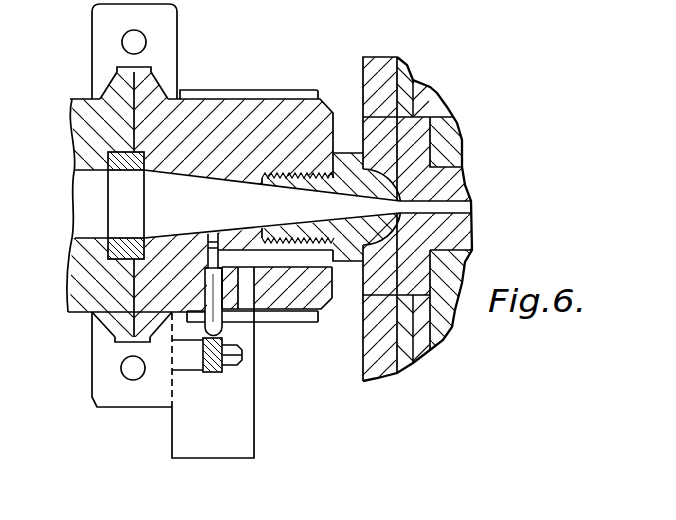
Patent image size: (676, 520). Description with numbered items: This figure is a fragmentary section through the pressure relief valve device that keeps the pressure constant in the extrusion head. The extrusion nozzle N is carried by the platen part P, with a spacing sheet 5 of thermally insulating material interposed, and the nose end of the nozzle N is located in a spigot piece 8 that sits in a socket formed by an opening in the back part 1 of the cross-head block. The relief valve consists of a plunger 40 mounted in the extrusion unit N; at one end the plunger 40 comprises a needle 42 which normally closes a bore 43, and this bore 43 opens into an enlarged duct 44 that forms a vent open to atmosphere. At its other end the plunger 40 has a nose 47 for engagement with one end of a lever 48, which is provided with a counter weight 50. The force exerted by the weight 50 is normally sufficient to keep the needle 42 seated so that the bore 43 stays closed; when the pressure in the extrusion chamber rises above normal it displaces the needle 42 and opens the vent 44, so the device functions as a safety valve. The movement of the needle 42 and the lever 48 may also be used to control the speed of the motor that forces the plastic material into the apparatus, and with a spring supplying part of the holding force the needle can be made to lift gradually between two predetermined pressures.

The extrusion nozzle N is at (268, 89).
The platen part P is at (368, 72).
The spacing sheet 5 is at (423, 91).
The back part 1 is at (463, 140).
The spigot piece 8 is at (453, 188).
The needle 42 is at (238, 241).
The bore 43 is at (211, 233).
The plunger 40 is at (228, 300).
The enlarged duct 44 is at (316, 262).
The nose 47 is at (224, 330).
The lever 48 is at (203, 370).
The counter weight 50 is at (192, 447).